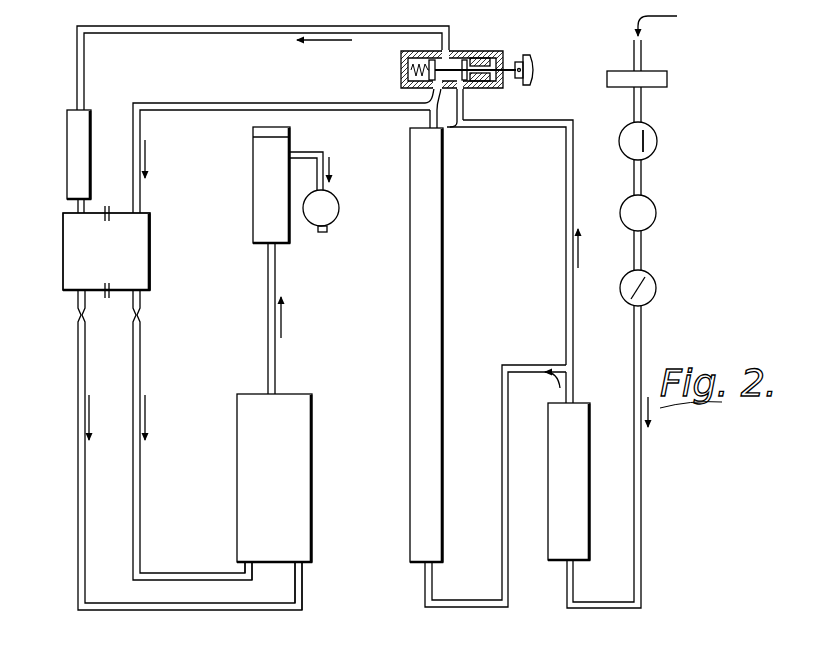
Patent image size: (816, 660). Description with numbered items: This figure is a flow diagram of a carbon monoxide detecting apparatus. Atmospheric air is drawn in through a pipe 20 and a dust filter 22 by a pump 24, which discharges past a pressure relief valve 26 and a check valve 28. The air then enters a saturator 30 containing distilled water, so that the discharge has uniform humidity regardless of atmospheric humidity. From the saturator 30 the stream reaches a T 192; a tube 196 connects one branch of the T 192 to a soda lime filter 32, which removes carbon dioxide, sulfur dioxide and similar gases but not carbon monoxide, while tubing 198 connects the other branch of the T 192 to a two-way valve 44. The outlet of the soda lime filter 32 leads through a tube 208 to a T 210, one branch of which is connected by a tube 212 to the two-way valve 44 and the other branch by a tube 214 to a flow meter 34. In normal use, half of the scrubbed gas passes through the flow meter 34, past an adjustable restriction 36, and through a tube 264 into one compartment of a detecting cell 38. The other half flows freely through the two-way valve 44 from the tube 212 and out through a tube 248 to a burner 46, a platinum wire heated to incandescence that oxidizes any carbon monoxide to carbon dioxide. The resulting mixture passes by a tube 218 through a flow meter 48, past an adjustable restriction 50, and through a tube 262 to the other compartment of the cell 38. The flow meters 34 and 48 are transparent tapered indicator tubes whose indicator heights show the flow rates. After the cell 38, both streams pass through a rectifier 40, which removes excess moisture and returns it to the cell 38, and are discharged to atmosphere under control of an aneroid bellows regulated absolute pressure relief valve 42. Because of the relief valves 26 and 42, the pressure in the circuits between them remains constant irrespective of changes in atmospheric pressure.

The pipe 20 is at (643, 47).
The dust filter 22 is at (651, 78).
The pump 24 is at (652, 143).
The pressure relief valve 26 is at (657, 205).
The check valve 28 is at (657, 287).
The saturator 30 is at (567, 499).
The soda lime filter 32 is at (421, 381).
The flow meter 34 is at (137, 270).
The adjustable restriction 36 is at (144, 316).
The detecting cell 38 is at (258, 437).
The rectifier 40 is at (265, 160).
The absolute pressure relief valve 42 is at (339, 208).
The two-way valve 44 is at (480, 51).
The burner 46 is at (77, 137).
The flow meter 48 is at (78, 232).
The adjustable restriction 50 is at (75, 316).
The T 192 is at (575, 367).
The tube 196 is at (503, 437).
The tubing 198 is at (531, 126).
The tube 208 is at (418, 121).
The T 210 is at (424, 102).
The tube 212 is at (460, 122).
The tube 214 is at (265, 105).
The tube 218 is at (77, 207).
The tube 248 is at (243, 28).
The tube 262 is at (300, 582).
The tube 264 is at (165, 578).